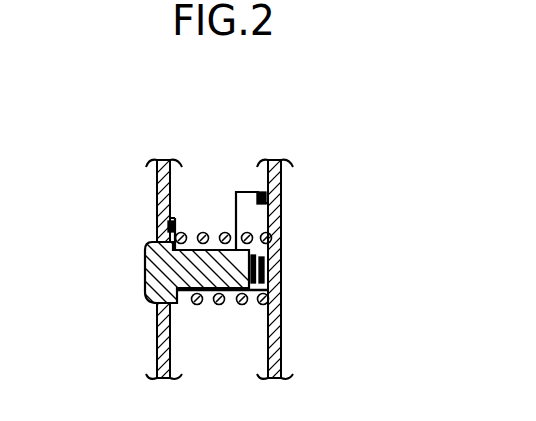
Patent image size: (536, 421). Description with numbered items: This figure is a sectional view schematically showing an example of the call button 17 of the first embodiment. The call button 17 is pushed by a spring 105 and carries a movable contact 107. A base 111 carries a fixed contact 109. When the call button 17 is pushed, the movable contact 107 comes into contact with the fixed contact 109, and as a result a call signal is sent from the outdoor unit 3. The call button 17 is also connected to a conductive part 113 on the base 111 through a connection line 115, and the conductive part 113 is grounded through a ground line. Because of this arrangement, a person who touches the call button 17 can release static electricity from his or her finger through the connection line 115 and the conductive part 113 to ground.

The outdoor unit 3 is at (144, 182).
The call button 17 is at (136, 277).
The spring 105 is at (195, 229).
The movable contact 107 is at (282, 279).
The fixed contact 109 is at (282, 257).
The base 111 is at (282, 188).
The conductive part 113 is at (260, 192).
The connection line 115 is at (242, 228).